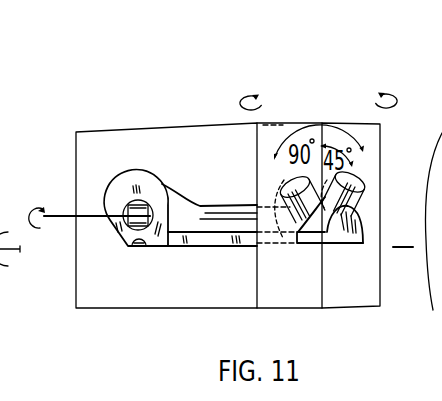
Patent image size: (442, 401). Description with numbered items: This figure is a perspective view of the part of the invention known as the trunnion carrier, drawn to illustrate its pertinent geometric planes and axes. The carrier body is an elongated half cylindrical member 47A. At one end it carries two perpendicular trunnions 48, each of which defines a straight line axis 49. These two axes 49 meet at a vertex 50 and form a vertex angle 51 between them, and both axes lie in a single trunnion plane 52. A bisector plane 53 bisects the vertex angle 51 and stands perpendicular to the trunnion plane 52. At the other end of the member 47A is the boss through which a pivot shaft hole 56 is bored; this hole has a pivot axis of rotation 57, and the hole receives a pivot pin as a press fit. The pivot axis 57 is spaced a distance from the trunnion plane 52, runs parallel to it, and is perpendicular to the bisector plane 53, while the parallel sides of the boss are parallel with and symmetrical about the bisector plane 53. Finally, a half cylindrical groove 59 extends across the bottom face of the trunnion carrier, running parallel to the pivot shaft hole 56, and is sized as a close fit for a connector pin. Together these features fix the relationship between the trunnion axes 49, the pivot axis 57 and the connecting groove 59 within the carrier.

The elongated half cylindrical member 47A is at (210, 207).
The trunnions 48 is at (293, 217).
The straight line axes 49 is at (290, 181).
The vertex 50 is at (322, 246).
The vertex angle 51 is at (342, 132).
The trunnion plane 52 is at (364, 307).
The bisector plane 53 is at (198, 308).
The pivot shaft hole 56 is at (133, 202).
The pivot axis of rotation 57 is at (60, 214).
The half cylindrical groove 59 is at (138, 250).